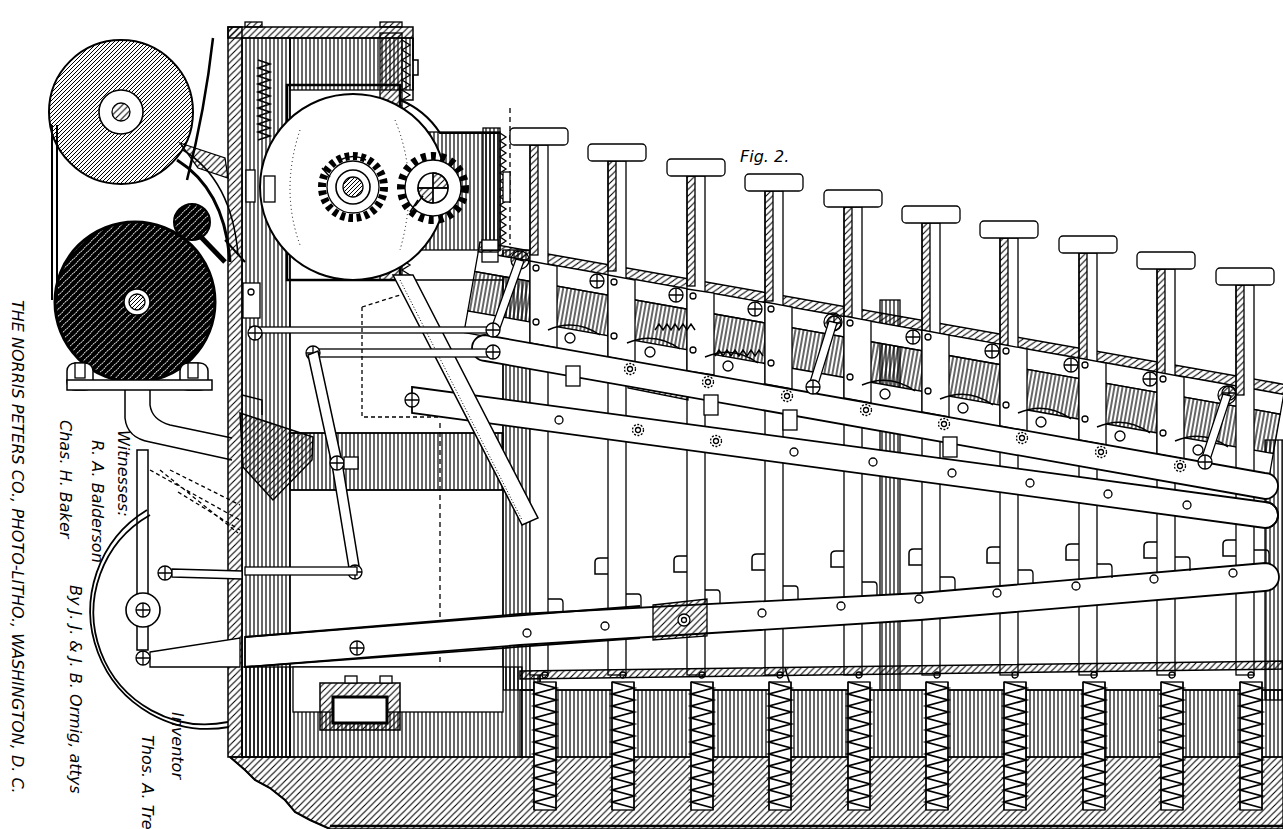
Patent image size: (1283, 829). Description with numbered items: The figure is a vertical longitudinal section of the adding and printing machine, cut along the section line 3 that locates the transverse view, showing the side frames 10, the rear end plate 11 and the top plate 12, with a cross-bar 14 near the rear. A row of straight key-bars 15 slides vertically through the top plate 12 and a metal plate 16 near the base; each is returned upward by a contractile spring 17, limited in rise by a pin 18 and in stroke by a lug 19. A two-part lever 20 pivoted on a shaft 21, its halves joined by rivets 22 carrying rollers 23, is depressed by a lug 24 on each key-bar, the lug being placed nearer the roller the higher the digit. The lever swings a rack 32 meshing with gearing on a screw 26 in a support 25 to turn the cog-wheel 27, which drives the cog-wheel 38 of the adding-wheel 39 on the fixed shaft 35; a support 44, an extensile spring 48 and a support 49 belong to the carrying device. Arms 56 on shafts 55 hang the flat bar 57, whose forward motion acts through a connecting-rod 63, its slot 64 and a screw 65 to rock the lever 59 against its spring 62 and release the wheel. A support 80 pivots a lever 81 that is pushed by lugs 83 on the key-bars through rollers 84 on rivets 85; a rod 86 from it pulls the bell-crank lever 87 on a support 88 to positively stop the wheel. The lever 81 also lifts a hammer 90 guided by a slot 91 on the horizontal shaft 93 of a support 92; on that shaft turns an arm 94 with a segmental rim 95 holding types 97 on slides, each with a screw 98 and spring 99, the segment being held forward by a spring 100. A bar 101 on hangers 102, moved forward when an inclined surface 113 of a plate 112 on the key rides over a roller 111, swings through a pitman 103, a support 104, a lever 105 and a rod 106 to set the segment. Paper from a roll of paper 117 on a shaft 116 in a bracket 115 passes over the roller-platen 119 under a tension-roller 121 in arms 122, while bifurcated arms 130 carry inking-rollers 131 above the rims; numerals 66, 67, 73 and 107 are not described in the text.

The section line 3 is at (472, 399).
The side frames 10 is at (442, 520).
The rear end plate 11 is at (232, 748).
The top plate 12 is at (415, 30).
The cross-bar 14 is at (400, 416).
The key-bar 15 is at (438, 132).
The metal plate 16 is at (790, 672).
The contractile spring 17 is at (760, 716).
The pin 18 is at (997, 666).
The lug 19 is at (720, 600).
The lever 20 is at (1255, 517).
The shaft 21 is at (420, 200).
The rivets 22 is at (799, 452).
The rollers 23 is at (722, 441).
The lug 24 is at (718, 405).
The support 25 is at (510, 190).
The screw 26 is at (418, 201).
The cog-wheel 27 is at (428, 152).
The rack 32 is at (377, 118).
The shaft 35 is at (336, 190).
The cog-wheel 38 is at (325, 170).
The adding-wheel 39 is at (346, 158).
The support 44 is at (275, 188).
The extensile spring 48 is at (270, 128).
The support 49 is at (212, 46).
The shafts 55 is at (528, 256).
The arms 56 is at (490, 323).
The flat bar 57 is at (668, 384).
The lever 59 is at (255, 268).
The spring 62 is at (256, 175).
The connecting-rod 63 is at (395, 300).
The longitudinal slot 64 is at (265, 330).
The screw 65 is at (262, 315).
The cam lever 66 is at (1065, 426).
The cam levers 67 is at (592, 360).
The ratchet teeth 73 is at (682, 335).
The support 80 is at (398, 683).
The lever 81 is at (414, 633).
The lugs 83 is at (598, 560).
The rollers 84 is at (682, 613).
The rivets 85 is at (676, 641).
The rod 86 is at (520, 497).
The bell-crank lever 87 is at (512, 205).
The support 88 is at (512, 232).
The hammer 90 is at (150, 505).
The slot 91 is at (158, 644).
The support 92 is at (196, 580).
The horizontal shaft 93 is at (138, 622).
The arm 94 is at (207, 502).
The segmental rim 95 is at (276, 456).
The type 97 is at (265, 408).
The screw 98 is at (300, 532).
The spring 99 is at (205, 482).
The spring 100 is at (140, 702).
The bar 101 is at (875, 417).
The hangers 102 is at (516, 285).
The pitman 103 is at (385, 358).
The support 104 is at (332, 483).
The lever 105 is at (357, 553).
The rod 106 is at (330, 580).
The pivot 107 is at (170, 566).
The roller 111 is at (872, 410).
The plate 112 is at (596, 318).
The inclined surface 113 is at (714, 360).
The bracket 115 is at (180, 168).
The shaft 116 is at (120, 134).
The roll of paper 117 is at (92, 168).
The roller-platen 119 is at (100, 246).
The tension-roller 121 is at (173, 220).
The arms 122 is at (260, 253).
The bifurcated arms 130 is at (143, 405).
The inking-rollers 131 is at (212, 360).